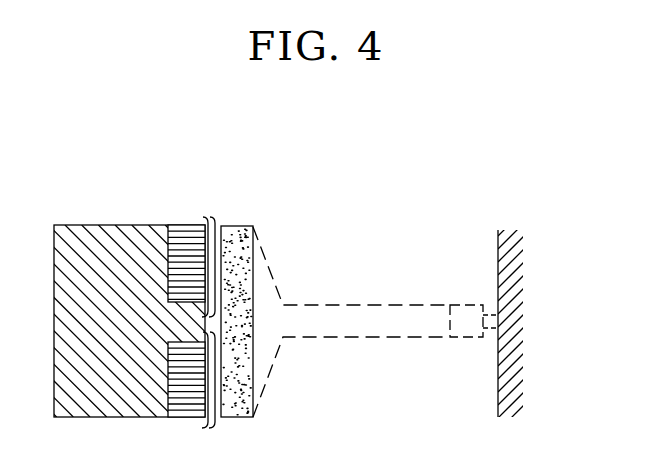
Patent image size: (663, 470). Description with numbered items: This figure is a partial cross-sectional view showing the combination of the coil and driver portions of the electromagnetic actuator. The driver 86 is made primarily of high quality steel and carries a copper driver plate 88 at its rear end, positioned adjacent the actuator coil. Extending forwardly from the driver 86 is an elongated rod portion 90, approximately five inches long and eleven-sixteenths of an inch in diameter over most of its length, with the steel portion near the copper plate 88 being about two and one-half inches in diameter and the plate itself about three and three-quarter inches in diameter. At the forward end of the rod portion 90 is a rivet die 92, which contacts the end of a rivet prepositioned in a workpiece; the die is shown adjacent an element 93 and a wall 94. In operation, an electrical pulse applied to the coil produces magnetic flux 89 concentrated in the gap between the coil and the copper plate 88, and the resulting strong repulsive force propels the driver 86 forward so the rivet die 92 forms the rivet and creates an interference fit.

The driver 86 is at (318, 302).
The copper driver plate 88 is at (242, 230).
The magnetic flux 89 is at (203, 218).
The elongated rod portion 90 is at (350, 340).
The rivet die 92 is at (463, 303).
The connection leads 93 is at (490, 334).
The wall 94 is at (498, 240).